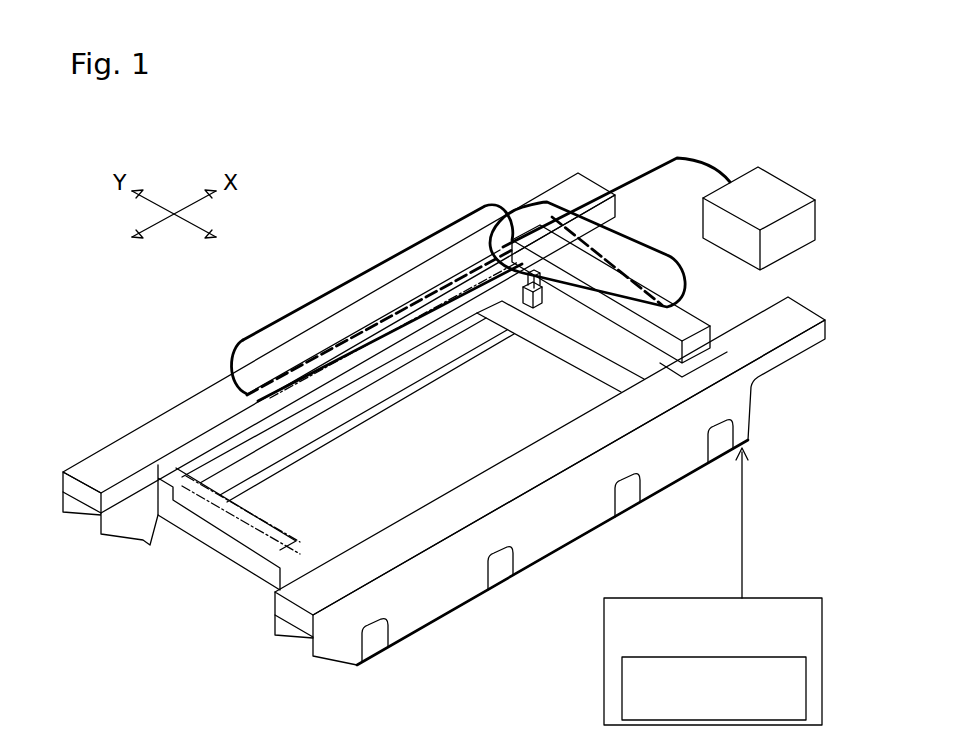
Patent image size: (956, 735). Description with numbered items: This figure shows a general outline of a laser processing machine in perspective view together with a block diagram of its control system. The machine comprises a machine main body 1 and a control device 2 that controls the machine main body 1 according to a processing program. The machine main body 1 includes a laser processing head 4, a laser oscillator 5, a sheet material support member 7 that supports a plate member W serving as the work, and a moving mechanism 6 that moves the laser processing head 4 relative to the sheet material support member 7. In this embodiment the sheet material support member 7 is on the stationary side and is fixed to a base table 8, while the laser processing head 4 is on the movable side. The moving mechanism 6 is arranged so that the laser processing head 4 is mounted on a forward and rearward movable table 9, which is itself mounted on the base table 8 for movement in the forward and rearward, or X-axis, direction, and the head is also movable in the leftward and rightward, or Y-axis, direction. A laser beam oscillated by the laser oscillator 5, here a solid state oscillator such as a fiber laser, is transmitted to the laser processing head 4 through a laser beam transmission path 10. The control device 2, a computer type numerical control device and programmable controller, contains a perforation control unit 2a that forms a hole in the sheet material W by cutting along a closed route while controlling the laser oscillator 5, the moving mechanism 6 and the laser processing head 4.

The machine main body 1 is at (152, 407).
The control device 2 is at (604, 612).
The perforation control unit 2a is at (622, 700).
The laser processing head 4 is at (524, 287).
The laser oscillator 5 is at (757, 192).
The moving mechanism 6 is at (697, 313).
The sheet material support member 7 is at (248, 567).
The base table 8 is at (446, 597).
The forward and rearward movable table 9 is at (688, 327).
The laser beam transmission path 10 is at (648, 170).
The plate member W is at (302, 510).